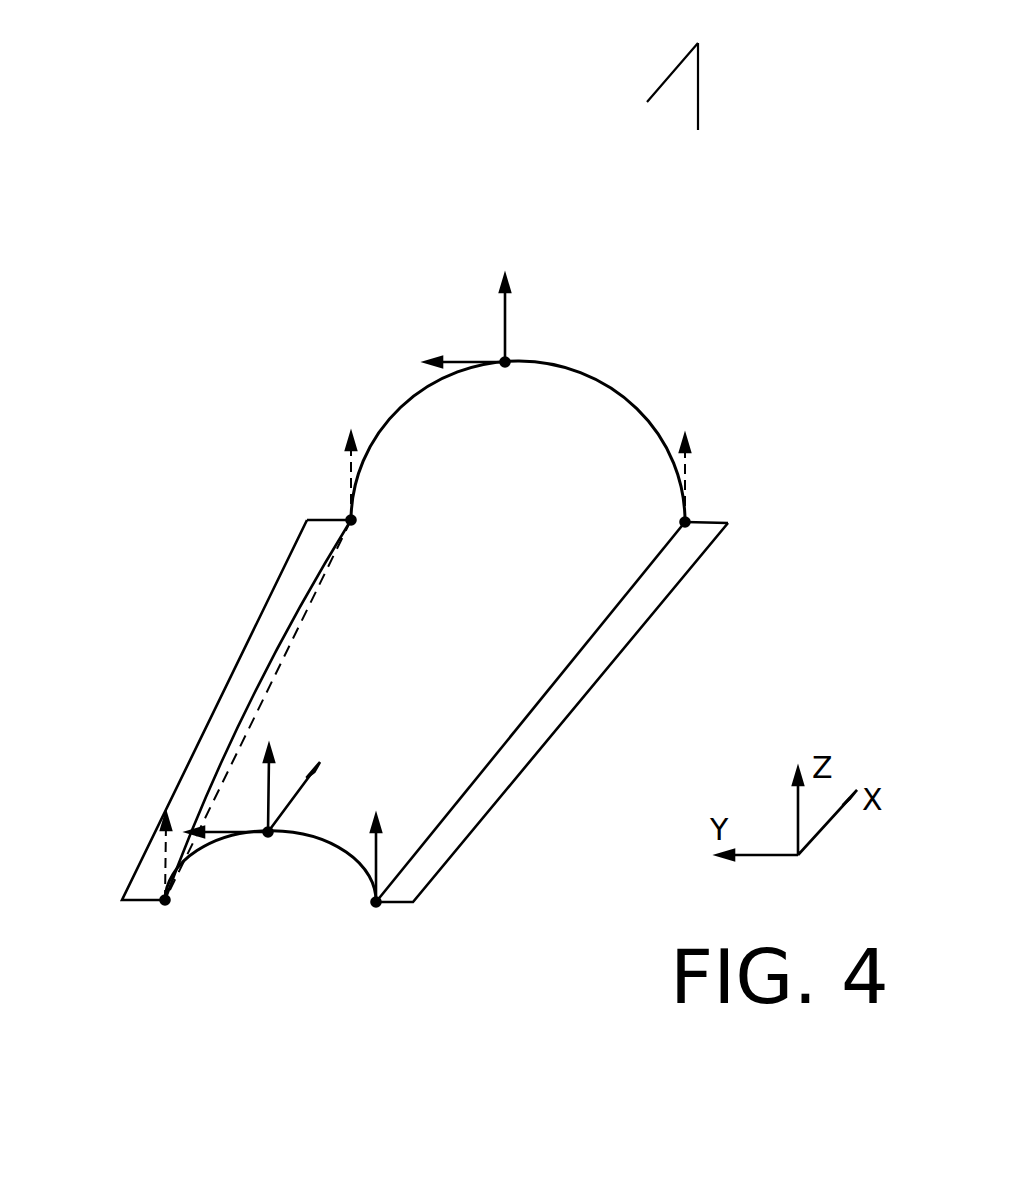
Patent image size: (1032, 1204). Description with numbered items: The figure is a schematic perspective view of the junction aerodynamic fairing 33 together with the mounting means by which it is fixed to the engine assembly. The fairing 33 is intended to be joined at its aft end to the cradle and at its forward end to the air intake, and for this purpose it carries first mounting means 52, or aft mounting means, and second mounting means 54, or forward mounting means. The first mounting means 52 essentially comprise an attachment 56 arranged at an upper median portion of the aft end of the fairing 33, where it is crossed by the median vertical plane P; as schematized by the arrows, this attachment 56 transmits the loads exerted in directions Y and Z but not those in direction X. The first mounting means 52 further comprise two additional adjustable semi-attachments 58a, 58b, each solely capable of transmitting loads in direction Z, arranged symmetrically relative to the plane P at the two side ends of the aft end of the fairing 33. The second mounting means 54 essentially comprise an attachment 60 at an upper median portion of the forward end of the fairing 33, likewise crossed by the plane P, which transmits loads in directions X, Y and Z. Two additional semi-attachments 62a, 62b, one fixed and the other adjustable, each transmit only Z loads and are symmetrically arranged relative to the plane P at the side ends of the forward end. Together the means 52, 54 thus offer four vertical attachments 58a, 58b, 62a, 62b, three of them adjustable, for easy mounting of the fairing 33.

The junction aerodynamic fairing 33 is at (190, 542).
The first mounting means 52 is at (782, 195).
The second mounting means 54 is at (387, 1013).
The attachment 56 is at (505, 362).
The adjustable semi-attachment 58a is at (685, 522).
The adjustable semi-attachment 58b is at (351, 520).
The attachment 60 is at (268, 832).
The semi-attachment 62a is at (376, 902).
The semi-attachment 62b is at (165, 900).
The median vertical plane P is at (697, 71).